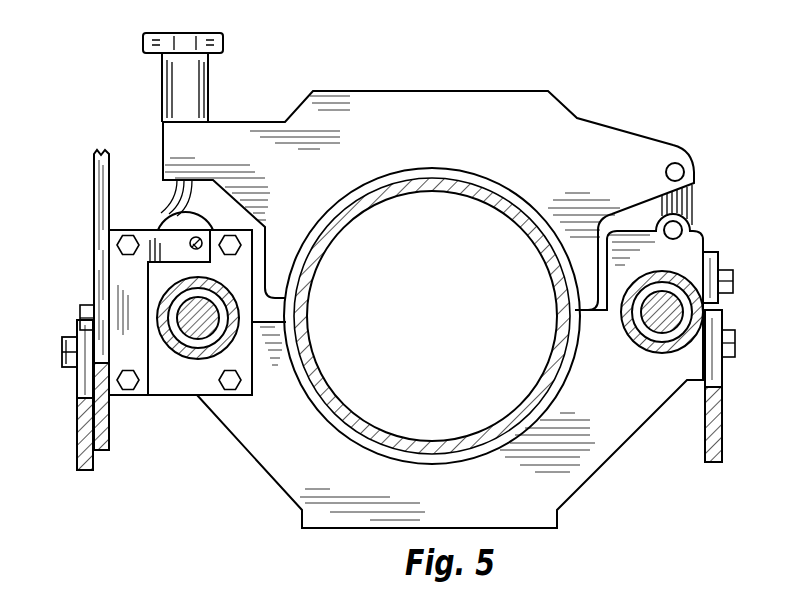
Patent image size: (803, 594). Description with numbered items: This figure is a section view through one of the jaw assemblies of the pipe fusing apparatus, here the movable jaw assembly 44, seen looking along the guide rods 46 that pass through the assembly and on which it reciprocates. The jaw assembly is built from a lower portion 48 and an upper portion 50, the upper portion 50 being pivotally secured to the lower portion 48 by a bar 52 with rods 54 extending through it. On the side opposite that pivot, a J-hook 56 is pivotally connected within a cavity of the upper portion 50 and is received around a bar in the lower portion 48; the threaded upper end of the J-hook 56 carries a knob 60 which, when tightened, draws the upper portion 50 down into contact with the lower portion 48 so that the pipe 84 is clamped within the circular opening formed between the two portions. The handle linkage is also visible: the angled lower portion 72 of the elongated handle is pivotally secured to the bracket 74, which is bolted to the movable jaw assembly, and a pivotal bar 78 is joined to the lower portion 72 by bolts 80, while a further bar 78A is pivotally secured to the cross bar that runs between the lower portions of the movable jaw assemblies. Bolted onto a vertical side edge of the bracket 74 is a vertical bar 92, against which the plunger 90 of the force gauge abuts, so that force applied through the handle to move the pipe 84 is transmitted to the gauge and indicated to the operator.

The movable jaw assembly 44 is at (587, 102).
The guide rods 46 is at (187, 322).
The lower portion 48 is at (512, 501).
The upper portion 50 is at (433, 309).
The bar 52 is at (696, 192).
The rods 54 is at (675, 163).
The J-hook 56 is at (175, 192).
The knob 60 is at (208, 74).
The angled lower portion 72 is at (98, 210).
The bracket 74 is at (195, 380).
The pivotal bar 78 is at (78, 385).
The bar 78A is at (713, 402).
The bolts 80 is at (62, 350).
The pipe 84 is at (422, 183).
The plunger 90 is at (201, 239).
The vertical bar 92 is at (150, 247).